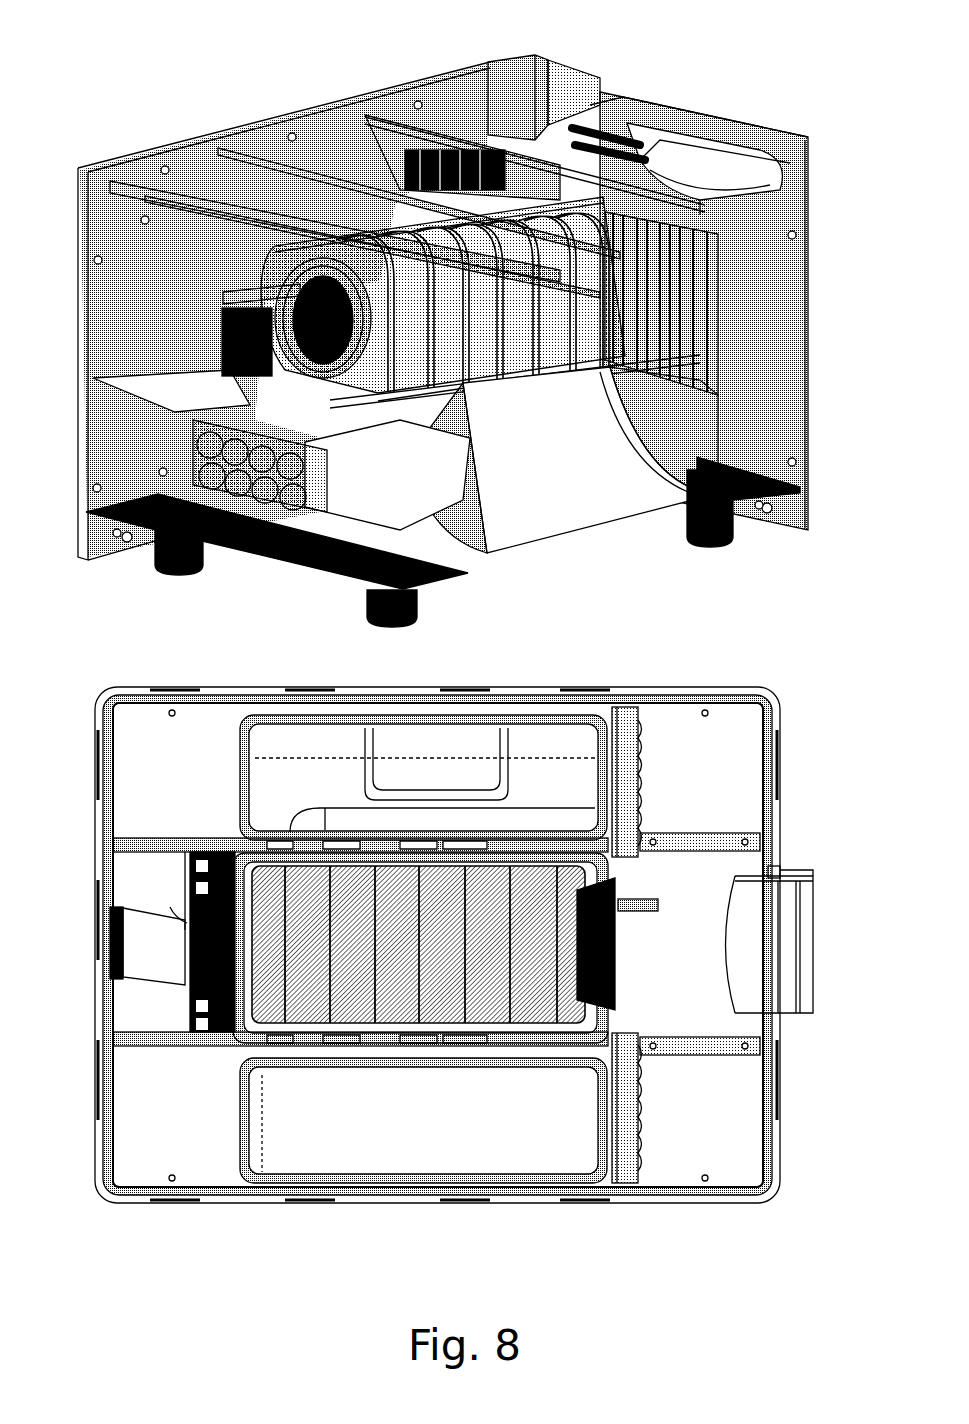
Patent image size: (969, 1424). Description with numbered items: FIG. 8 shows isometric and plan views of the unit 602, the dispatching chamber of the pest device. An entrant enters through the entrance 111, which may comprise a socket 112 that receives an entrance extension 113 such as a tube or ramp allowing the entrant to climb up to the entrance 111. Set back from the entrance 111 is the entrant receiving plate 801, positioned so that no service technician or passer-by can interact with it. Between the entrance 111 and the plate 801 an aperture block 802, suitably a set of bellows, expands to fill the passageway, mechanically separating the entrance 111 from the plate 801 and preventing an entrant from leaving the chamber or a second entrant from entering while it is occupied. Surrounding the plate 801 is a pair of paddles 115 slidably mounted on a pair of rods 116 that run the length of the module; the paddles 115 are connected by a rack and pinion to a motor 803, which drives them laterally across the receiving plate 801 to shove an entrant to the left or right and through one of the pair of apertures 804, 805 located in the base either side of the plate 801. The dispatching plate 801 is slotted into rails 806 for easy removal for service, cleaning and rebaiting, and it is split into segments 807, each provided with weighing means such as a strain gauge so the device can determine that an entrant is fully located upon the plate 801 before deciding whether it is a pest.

The entrance 111 is at (797, 960).
The socket 112 is at (773, 869).
The entrance extension 113 is at (805, 870).
The paddles 115 is at (540, 322).
The rods 116 is at (447, 132).
The unit 602 is at (795, 112).
The entrant receiving plate 801 is at (488, 898).
The aperture block 802 is at (405, 163).
The motor 803 is at (548, 137).
The aperture 804 is at (256, 366).
The aperture 805 is at (636, 503).
The rails 806 is at (326, 428).
The segments 807 is at (568, 1000).